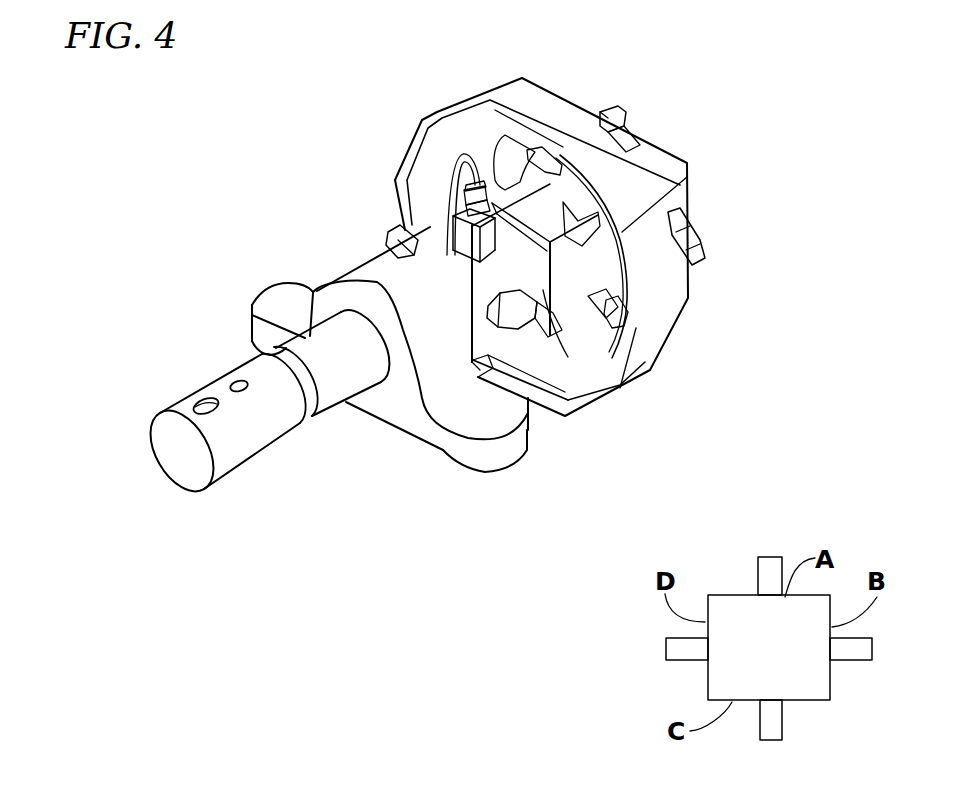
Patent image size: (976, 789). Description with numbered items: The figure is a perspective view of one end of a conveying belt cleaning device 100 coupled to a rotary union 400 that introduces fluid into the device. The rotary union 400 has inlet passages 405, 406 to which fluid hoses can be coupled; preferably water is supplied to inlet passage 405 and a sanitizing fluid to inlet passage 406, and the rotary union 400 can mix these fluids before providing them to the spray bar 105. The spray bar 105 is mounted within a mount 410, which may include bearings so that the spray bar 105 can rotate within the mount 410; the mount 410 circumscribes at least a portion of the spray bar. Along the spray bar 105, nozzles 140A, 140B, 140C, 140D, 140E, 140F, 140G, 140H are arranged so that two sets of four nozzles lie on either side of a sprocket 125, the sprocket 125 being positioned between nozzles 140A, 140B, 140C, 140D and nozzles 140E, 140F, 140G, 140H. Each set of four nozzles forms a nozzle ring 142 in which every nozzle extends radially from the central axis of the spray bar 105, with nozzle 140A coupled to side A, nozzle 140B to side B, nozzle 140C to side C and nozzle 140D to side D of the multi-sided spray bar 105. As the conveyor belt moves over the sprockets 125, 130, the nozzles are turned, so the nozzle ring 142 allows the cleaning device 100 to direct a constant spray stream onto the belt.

The conveying belt cleaning device 100 is at (122, 146).
The spray bar 105 is at (331, 402).
The sprocket 125 is at (648, 370).
The sprocket 130 is at (590, 788).
The nozzle 140A is at (400, 228).
The nozzle 140B is at (476, 205).
The nozzle 140C is at (474, 333).
The nozzle 140D is at (553, 345).
The nozzle 140E is at (525, 157).
The nozzle 140F is at (612, 105).
The nozzle 140G is at (697, 262).
The nozzle 140H is at (620, 318).
The nozzle ring 142 is at (376, 186).
The rotary union 400 is at (173, 407).
The inlet passage 405 is at (209, 393).
The inlet passage 406 is at (238, 375).
The mount 410 is at (385, 256).